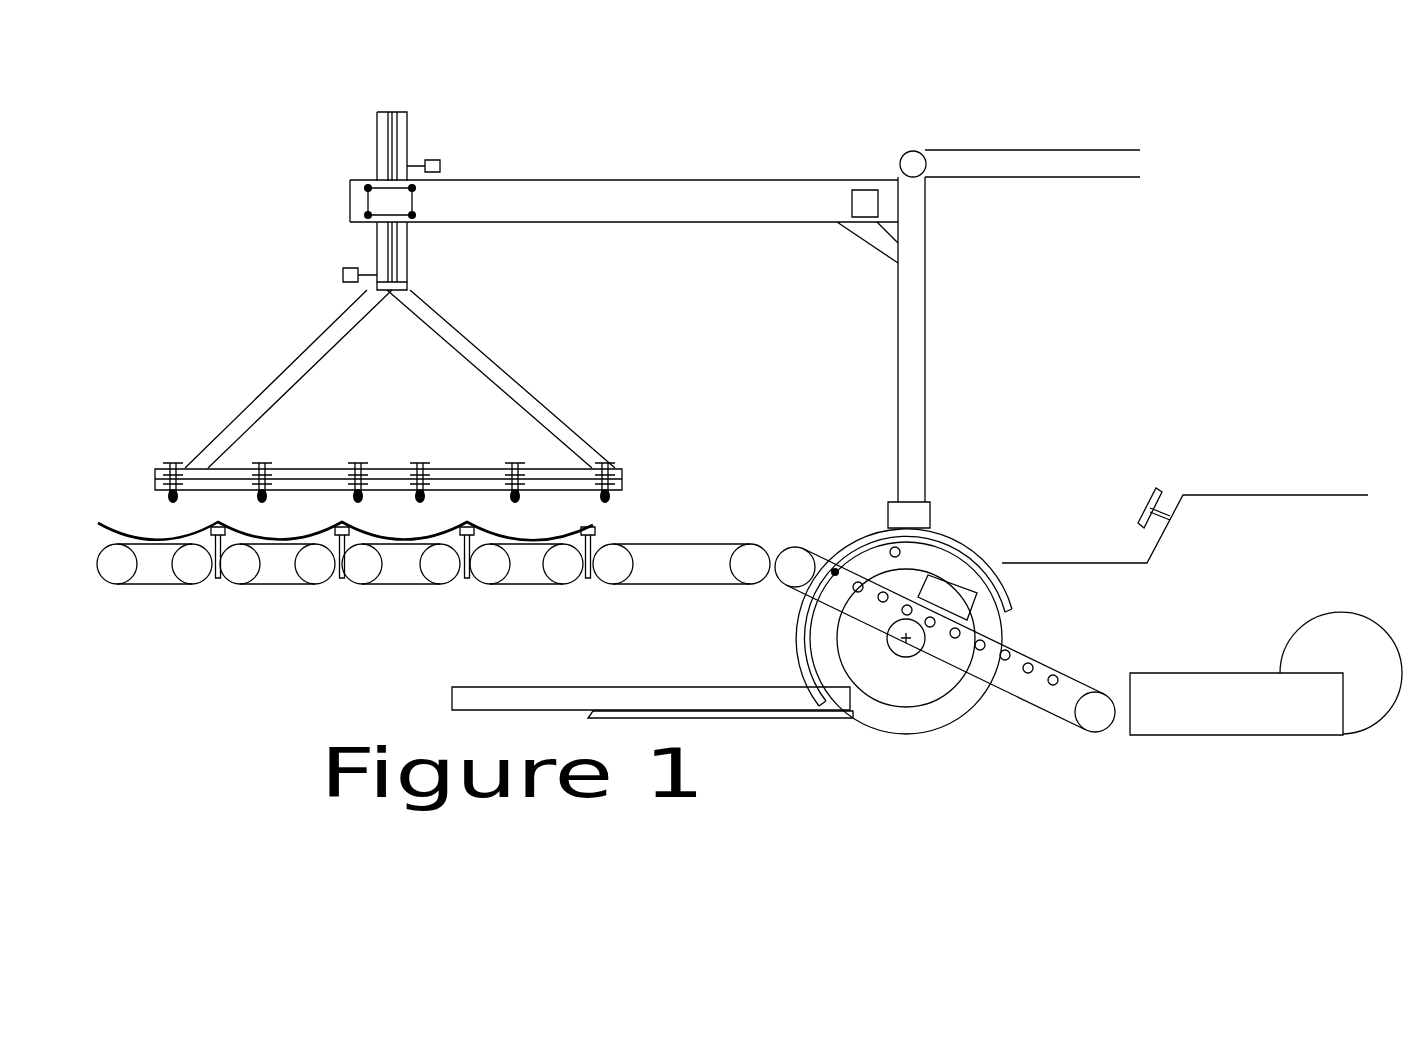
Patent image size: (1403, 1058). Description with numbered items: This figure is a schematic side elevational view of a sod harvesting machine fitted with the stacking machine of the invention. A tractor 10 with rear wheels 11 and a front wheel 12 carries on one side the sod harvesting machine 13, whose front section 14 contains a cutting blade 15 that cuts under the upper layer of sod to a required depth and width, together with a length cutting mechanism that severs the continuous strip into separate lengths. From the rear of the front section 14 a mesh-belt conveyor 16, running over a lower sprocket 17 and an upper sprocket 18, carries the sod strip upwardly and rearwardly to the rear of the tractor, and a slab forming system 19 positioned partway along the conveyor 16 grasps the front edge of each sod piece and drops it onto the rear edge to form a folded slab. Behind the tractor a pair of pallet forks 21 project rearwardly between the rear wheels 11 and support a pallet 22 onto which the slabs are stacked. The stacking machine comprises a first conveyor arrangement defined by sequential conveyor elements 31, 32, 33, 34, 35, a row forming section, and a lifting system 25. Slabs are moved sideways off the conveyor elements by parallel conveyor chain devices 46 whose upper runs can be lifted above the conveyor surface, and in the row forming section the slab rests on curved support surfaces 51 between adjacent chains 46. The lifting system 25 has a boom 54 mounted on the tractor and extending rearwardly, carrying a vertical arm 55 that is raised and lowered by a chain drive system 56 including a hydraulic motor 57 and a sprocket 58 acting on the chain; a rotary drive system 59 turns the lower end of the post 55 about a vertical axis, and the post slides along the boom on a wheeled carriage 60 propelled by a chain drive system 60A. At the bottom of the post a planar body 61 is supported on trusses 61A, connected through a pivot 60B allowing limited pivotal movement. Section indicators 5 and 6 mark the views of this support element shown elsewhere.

The tractor 10 is at (1234, 494).
The rear wheels 11 is at (932, 558).
The front wheel 12 is at (1319, 633).
The sod harvesting machine 13 is at (1088, 627).
The front section 14 is at (1148, 689).
The cutting blade 15 is at (1337, 741).
The conveyor 16 is at (1011, 641).
The lower sprocket 17 is at (1100, 720).
The upper sprocket 18 is at (798, 566).
The slab forming system 19 is at (957, 588).
The pallet forks 21 is at (723, 709).
The pallet 22 is at (625, 696).
The lifting system 25 is at (620, 383).
The conveyor element 31 is at (706, 586).
The conveyor element 32 is at (522, 588).
The conveyor element 33 is at (395, 588).
The conveyor element 34 is at (270, 588).
The conveyor element 35 is at (158, 588).
The conveyor chain device 46 is at (335, 530).
The curved support surface 51 is at (208, 520).
The boom 54 is at (604, 199).
The vertical arm 55 is at (375, 122).
The chain drive system 56 is at (400, 135).
The hydraulic motor 57 is at (443, 165).
The sprocket 58 is at (383, 166).
The rotary drive system 59 is at (341, 272).
The carriage 60 is at (416, 216).
The chain drive system 60A is at (852, 194).
The stop 60B is at (408, 285).
The planar body 61 is at (624, 467).
The trusses 61A is at (482, 360).
The section line 5- 5 is at (385, 518).
The section line 6- 6 is at (112, 498).